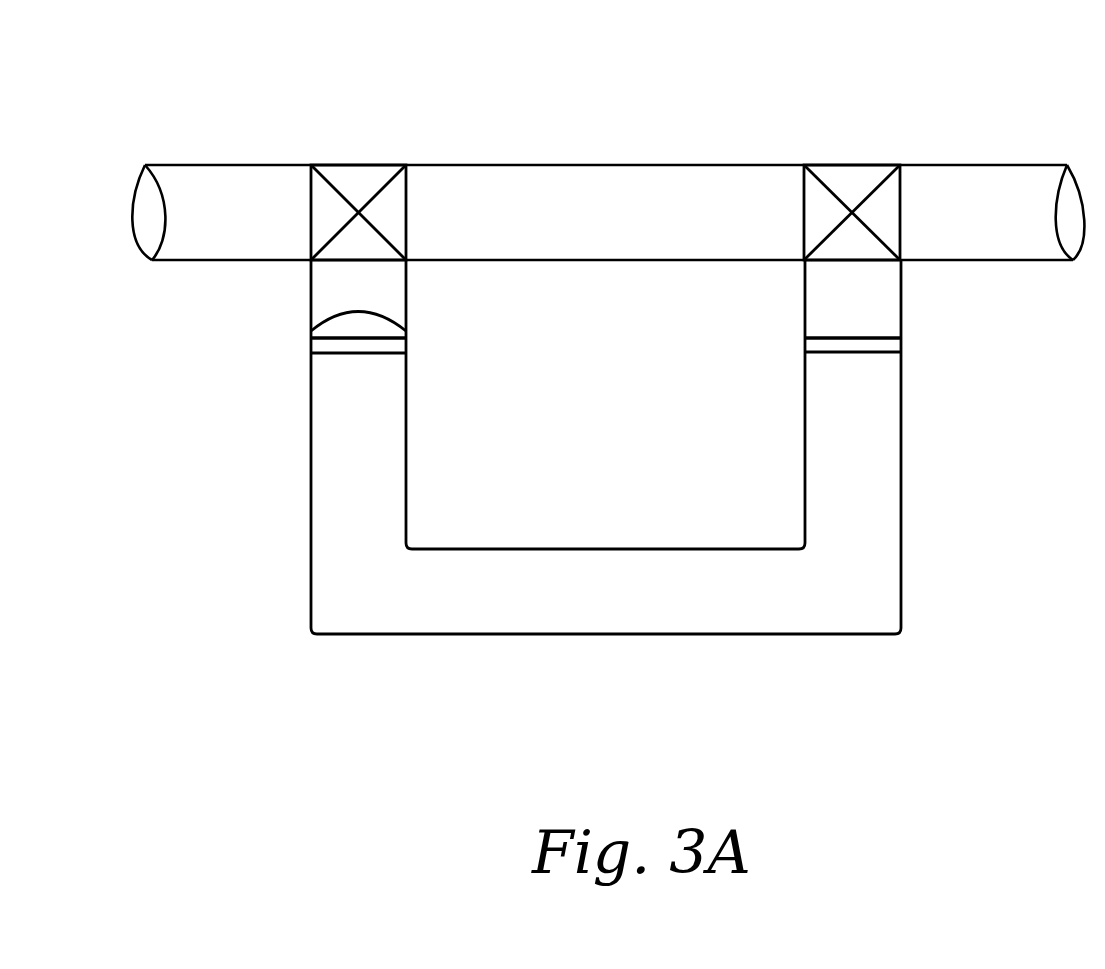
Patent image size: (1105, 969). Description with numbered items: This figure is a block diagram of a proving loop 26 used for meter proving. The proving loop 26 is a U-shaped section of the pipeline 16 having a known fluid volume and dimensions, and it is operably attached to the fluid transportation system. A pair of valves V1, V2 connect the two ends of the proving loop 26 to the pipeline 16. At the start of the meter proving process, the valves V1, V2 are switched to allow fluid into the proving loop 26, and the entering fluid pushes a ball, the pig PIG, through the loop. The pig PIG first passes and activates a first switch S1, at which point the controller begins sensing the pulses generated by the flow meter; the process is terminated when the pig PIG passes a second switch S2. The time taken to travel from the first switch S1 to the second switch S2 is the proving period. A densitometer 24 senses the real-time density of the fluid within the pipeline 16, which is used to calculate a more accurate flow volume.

The pipeline 16 is at (222, 165).
The first valve V1 is at (365, 165).
The second valve V2 is at (850, 165).
The pig PIG is at (406, 332).
The first switch S1 is at (311, 350).
The second switch S2 is at (900, 347).
The densitometer 24 is at (805, 348).
The proving loop 26 is at (472, 643).